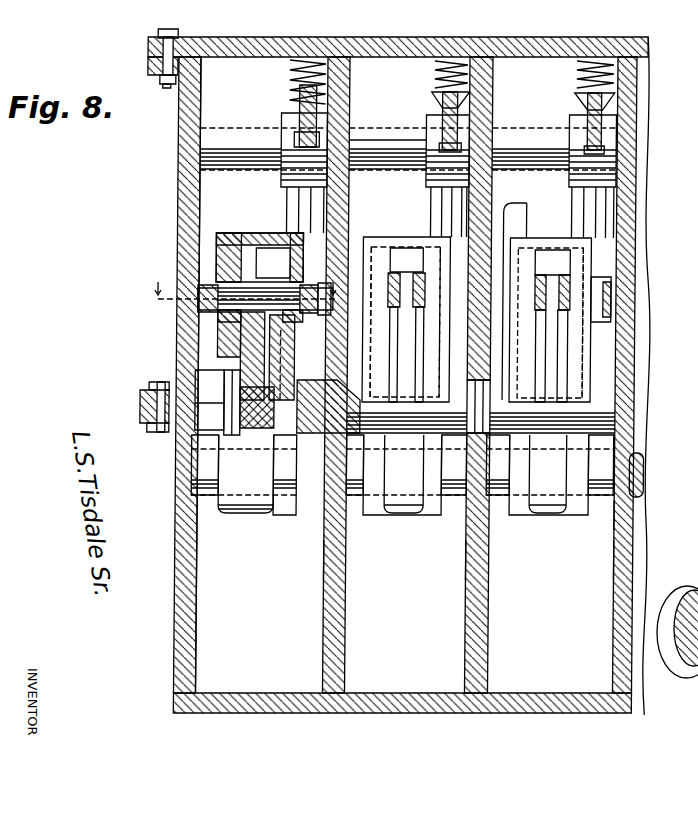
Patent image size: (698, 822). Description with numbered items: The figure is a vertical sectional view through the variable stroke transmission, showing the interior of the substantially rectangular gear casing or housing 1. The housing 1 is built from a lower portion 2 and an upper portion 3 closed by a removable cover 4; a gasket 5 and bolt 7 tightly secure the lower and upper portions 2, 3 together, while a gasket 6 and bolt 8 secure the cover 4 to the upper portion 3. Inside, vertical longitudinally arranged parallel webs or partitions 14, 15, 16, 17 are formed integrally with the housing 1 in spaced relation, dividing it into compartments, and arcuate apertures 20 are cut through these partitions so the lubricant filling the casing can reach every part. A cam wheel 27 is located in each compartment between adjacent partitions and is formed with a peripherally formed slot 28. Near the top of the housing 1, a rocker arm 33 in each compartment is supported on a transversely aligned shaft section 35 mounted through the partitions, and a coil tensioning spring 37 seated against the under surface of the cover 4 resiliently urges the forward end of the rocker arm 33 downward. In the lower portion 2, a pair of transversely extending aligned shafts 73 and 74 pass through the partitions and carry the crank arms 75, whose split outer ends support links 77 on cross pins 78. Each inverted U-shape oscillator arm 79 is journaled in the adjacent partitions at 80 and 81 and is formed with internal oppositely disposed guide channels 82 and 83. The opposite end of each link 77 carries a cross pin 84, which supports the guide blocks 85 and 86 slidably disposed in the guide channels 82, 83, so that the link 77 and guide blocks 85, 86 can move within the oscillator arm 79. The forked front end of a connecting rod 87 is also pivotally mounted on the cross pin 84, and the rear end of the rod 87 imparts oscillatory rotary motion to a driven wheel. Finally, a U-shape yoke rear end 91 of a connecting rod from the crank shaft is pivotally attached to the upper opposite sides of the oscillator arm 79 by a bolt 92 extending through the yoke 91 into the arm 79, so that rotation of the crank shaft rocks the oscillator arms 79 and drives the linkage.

The gear casing or housing 1 is at (179, 168).
The lower portion 2 is at (176, 562).
The upper portion 3 is at (179, 218).
The removable cover 4 is at (262, 42).
The gasket 5 is at (140, 396).
The gasket 6 is at (148, 48).
The bolt 7 is at (150, 428).
The bolt 8 is at (172, 44).
The web or partition 14 is at (244, 296).
The web or partition 15 is at (143, 406).
The web or partition 16 is at (470, 524).
The web or partition 17 is at (328, 516).
The arcuate aperture 20 is at (328, 542).
The cam wheel 27 is at (433, 192).
The peripherally formed slot 28 is at (450, 216).
The rocker arm 33 is at (300, 116).
The shaft section 35 is at (368, 132).
The coil tensioning spring 37 is at (290, 68).
The shaft 73 is at (328, 406).
The shaft 74 is at (501, 497).
The crank arm 75 is at (403, 475).
The link 77 is at (240, 376).
The cross pin 78 is at (256, 426).
The oscillator arm 79 is at (262, 233).
The journal 80 is at (195, 442).
The journal 81 is at (443, 475).
The guide channel 82 is at (230, 236).
The guide channel 83 is at (296, 241).
The cross pin 84 is at (265, 294).
The guide block 85 is at (226, 323).
The guide block 86 is at (290, 275).
The connecting rod 87 is at (243, 340).
The U-shape yoke rear end 91 is at (205, 288).
The bolt 92 is at (200, 300).